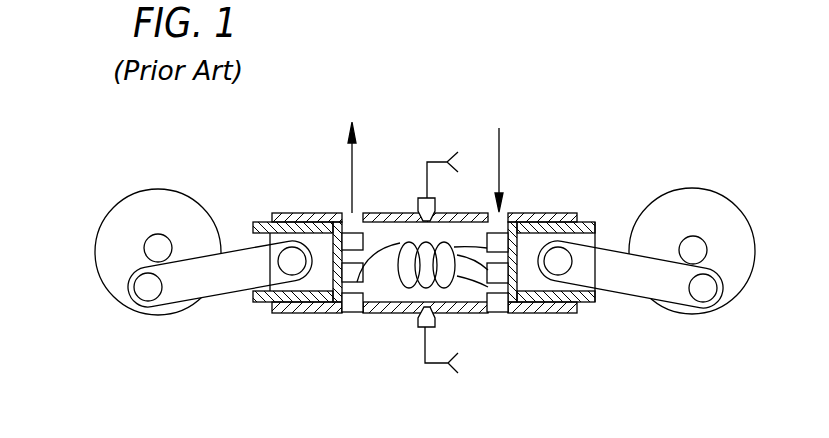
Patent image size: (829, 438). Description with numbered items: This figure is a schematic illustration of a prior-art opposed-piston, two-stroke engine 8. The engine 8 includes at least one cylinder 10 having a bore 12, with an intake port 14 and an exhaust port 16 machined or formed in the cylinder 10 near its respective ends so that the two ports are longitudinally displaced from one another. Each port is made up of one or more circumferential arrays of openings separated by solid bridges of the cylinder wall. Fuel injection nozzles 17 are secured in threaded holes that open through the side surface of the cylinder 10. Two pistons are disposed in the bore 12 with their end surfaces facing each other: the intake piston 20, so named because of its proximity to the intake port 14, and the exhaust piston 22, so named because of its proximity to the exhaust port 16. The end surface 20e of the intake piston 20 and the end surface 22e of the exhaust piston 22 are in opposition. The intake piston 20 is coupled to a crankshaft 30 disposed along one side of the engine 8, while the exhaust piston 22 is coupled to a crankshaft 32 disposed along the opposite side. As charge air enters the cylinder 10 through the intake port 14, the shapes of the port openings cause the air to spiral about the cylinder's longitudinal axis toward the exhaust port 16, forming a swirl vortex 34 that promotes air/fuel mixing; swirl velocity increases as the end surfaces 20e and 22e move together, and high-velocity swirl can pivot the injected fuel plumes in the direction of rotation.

The opposed-piston two-stroke engine 8 is at (638, 70).
The cylinder 10 is at (289, 212).
The bore 12 is at (390, 232).
The intake port 14 is at (498, 312).
The exhaust port 16 is at (350, 313).
The fuel injection nozzles 17 is at (436, 208).
The intake piston 20 is at (592, 221).
The end surface of intake piston 20e is at (497, 240).
The exhaust piston 22 is at (257, 302).
The end surface of exhaust piston 22e is at (357, 247).
The crankshaft 30 is at (724, 192).
The crankshaft 32 is at (110, 208).
The swirl vortex 34 is at (457, 290).